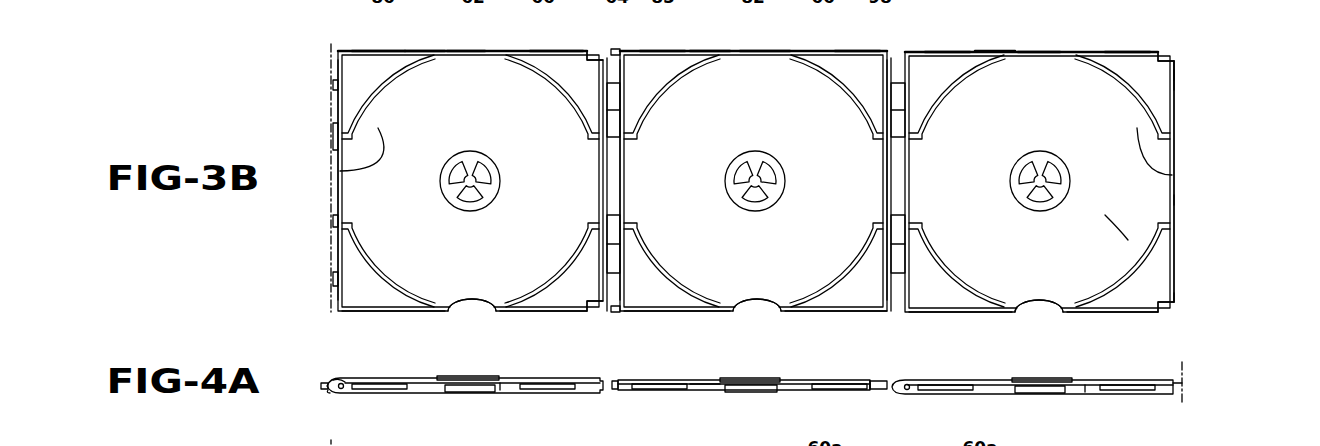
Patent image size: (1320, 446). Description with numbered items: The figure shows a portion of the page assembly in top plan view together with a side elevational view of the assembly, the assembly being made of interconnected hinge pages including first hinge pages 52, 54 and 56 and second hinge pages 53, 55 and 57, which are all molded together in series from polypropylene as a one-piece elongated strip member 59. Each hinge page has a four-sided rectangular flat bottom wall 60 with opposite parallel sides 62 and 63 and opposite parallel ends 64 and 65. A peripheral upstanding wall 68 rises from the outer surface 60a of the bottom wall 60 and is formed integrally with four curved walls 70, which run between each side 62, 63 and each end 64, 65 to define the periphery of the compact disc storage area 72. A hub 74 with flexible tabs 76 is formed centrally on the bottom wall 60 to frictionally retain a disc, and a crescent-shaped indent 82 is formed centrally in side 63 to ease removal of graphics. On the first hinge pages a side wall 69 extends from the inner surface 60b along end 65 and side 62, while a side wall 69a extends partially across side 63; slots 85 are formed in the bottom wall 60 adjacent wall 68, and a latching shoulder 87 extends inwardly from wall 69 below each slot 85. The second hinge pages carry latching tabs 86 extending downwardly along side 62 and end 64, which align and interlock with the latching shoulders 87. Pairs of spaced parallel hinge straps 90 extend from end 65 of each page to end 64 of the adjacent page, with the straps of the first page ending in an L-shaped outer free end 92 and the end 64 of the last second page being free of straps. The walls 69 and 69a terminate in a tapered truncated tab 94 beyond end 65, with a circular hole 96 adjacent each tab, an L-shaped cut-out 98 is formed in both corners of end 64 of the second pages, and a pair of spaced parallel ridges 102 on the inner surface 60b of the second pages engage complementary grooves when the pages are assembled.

In FIG. 4A, the first hinge page 52 is at (536, 400).
In FIG. 4A, the second hinge page 53 is at (809, 396).
In FIG. 4A, the first hinge page 54 is at (1162, 401).
In FIG. 3B, the second hinge page 55 is at (328, 64).
In FIG. 3B, the first hinge page 56 is at (696, 318).
In FIG. 3B, the second hinge page 57 is at (1187, 104).
In FIG. 3B, the one-piece member 59 is at (1202, 43).
In FIG. 4A, the one-piece member 59 is at (1202, 380).
In FIG. 3B, the bottom wall 60 is at (490, 85).
In FIG. 3B, the outer surface 60a is at (1105, 215).
In FIG. 4A, the outer surface 60a is at (1018, 381).
In FIG. 4A, the inner surface 60b is at (705, 392).
In FIG. 3B, the side 62 is at (418, 51).
In FIG. 3B, the side 63 is at (543, 312).
In FIG. 3B, the end 64 is at (602, 109).
In FIG. 3B, the end 65 is at (338, 96).
In FIG. 3B, the peripheral upstanding wall 68 is at (403, 312).
In FIG. 4A, the side wall 69 is at (505, 390).
In FIG. 4A, the side wall 69a is at (337, 379).
In FIG. 3B, the curved wall 70 is at (385, 270).
In FIG. 3B, the compact disc storage area 72 is at (340, 171).
In FIG. 3B, the hub 74 is at (482, 160).
In FIG. 4A, the hub 74 is at (468, 378).
In FIG. 3B, the flexible tabs 76 is at (471, 166).
In FIG. 3B, the crescent-shaped indent 82 is at (473, 301).
In FIG. 3B, the slots 85 is at (664, 50).
In FIG. 3B, the latching tabs 86 is at (375, 51).
In FIG. 4A, the latching tabs 86 is at (668, 392).
In FIG. 4A, the latching shoulder 87 is at (385, 390).
In FIG. 3B, the hinge straps 90 is at (338, 124).
In FIG. 4A, the L-shaped outer free end 92 is at (322, 385).
In FIG. 4A, the tapered truncated tab 94 is at (328, 393).
In FIG. 4A, the circular hole 96 is at (341, 390).
In FIG. 3B, the L-shaped cut-out 98 is at (590, 58).
In FIG. 4A, the L-shaped cut-out 98 is at (875, 382).
In FIG. 4A, the ridges 102 is at (621, 386).